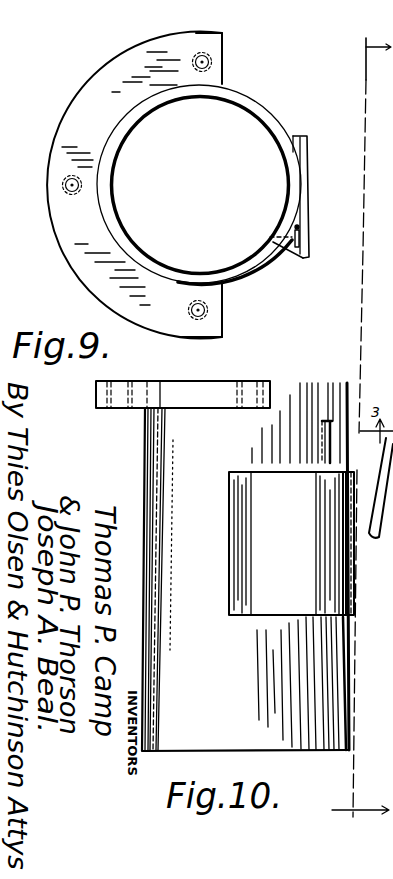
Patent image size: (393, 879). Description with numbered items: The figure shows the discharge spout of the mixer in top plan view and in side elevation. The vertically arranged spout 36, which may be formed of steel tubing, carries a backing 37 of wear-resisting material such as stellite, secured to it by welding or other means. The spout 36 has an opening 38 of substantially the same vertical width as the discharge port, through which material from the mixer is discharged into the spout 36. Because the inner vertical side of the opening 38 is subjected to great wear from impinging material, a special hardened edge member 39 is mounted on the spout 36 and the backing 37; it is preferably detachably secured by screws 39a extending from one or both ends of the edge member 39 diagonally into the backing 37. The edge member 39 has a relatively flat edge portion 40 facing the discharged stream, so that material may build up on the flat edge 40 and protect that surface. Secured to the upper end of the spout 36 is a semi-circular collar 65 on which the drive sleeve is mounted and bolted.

In FIG. 9, the spout 36 is at (270, 106).
In FIG. 10, the spout 36 is at (306, 658).
In FIG. 9, the backing 37 is at (309, 150).
In FIG. 9, the opening 38 is at (218, 282).
In FIG. 9, the hardened edge member 39 is at (305, 247).
In FIG. 10, the hardened edge member 39 is at (328, 562).
In FIG. 9, the screws 39a is at (300, 240).
In FIG. 9, the flat edge portion 40 is at (305, 259).
In FIG. 10, the flat edge portion 40 is at (350, 518).
In FIG. 9, the semi-circular collar 65 is at (97, 84).
In FIG. 10, the semi-circular collar 65 is at (98, 409).